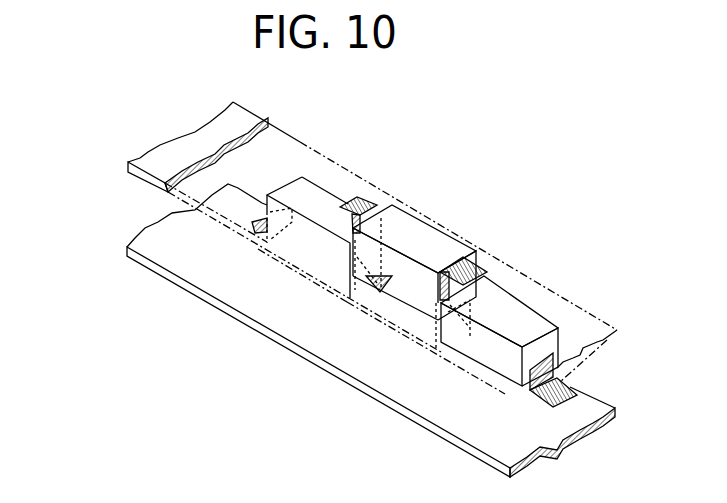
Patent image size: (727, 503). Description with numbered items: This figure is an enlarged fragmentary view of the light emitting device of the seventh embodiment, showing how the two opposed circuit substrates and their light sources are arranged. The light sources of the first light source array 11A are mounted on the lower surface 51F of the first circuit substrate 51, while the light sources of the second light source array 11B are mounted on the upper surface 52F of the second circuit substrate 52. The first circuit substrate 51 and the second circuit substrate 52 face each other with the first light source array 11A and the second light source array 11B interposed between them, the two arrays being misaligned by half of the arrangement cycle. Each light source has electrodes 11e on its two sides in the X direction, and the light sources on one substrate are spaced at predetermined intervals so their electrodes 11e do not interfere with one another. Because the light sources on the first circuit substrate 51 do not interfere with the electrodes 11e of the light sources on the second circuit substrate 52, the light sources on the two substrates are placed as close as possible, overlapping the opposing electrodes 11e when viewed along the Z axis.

The first circuit substrate 51 is at (338, 248).
The lower surface of the first circuit substrate 51F is at (138, 178).
The second circuit substrate 52 is at (327, 330).
The upper surface of the second circuit substrate 52F is at (147, 240).
The first light source array 11A is at (440, 212).
The second light source array 11B is at (322, 168).
The electrodes 11e is at (362, 191).